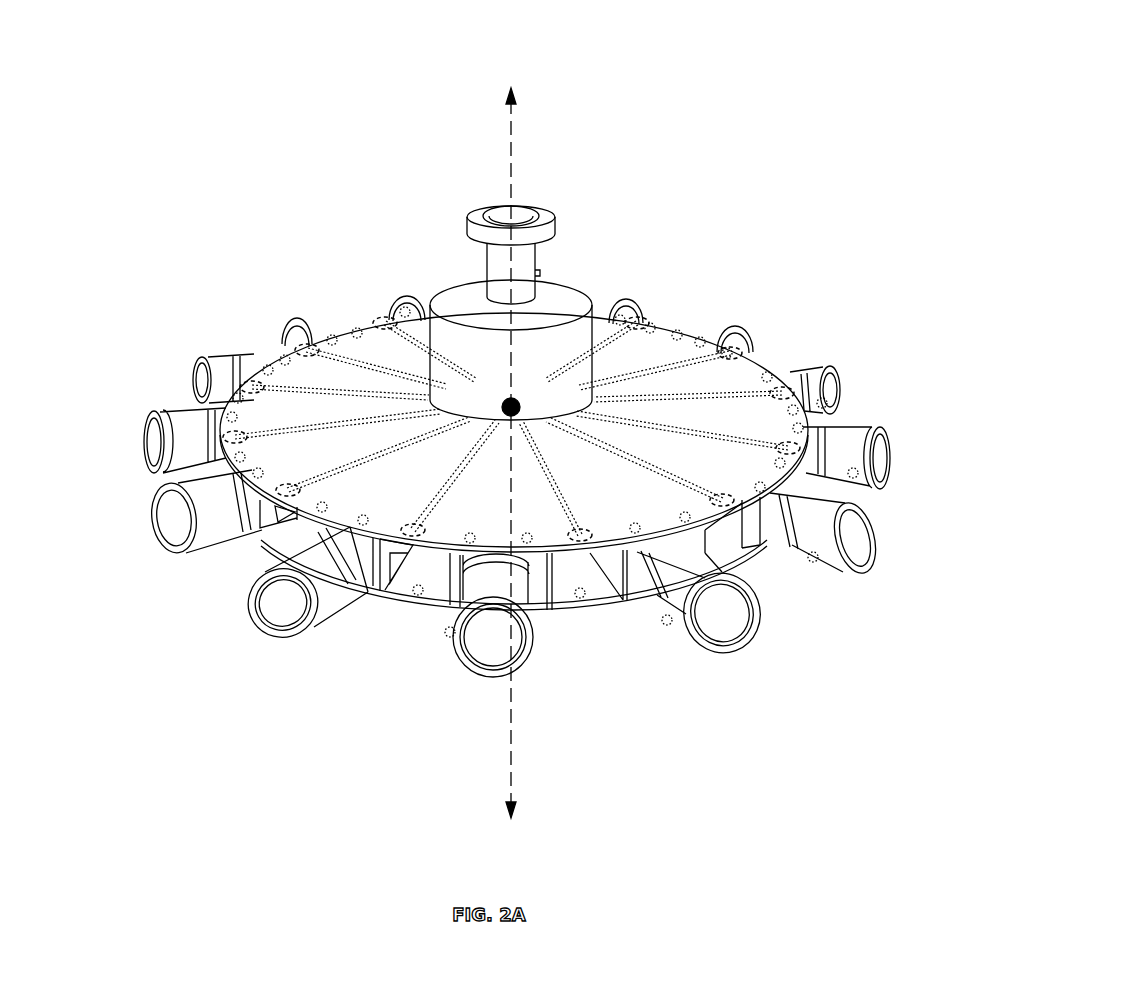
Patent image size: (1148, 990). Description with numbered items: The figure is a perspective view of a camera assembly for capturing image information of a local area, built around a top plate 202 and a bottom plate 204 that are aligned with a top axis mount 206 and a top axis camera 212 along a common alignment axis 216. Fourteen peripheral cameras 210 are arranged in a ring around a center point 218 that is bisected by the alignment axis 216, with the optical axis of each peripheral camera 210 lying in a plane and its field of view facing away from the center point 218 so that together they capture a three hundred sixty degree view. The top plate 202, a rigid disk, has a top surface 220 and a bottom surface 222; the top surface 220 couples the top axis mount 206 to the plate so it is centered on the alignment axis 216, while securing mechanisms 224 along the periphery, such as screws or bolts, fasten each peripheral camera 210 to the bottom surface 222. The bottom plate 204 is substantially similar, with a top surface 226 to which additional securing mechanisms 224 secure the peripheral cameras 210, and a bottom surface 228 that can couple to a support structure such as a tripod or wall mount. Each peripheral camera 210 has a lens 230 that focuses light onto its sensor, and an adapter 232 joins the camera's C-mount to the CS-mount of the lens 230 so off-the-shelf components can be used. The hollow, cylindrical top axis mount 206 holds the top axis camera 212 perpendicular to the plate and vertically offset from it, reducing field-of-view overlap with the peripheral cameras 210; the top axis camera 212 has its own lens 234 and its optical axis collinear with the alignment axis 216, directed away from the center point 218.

The top plate 202 is at (520, 399).
The bottom plate 204 is at (430, 658).
The top axis mount 206 is at (573, 302).
The peripheral camera 210 is at (780, 593).
The top axis camera 212 is at (568, 208).
The alignment axis 216 is at (510, 427).
The center point 218 is at (505, 402).
The top surface 220 is at (683, 342).
The bottom surface 222 is at (465, 406).
The securing mechanisms 224 is at (470, 540).
The top surface 226 is at (557, 597).
The bottom surface 228 is at (264, 548).
The lens 230 is at (277, 600).
The adapter 232 is at (297, 614).
The lens 234 is at (490, 210).